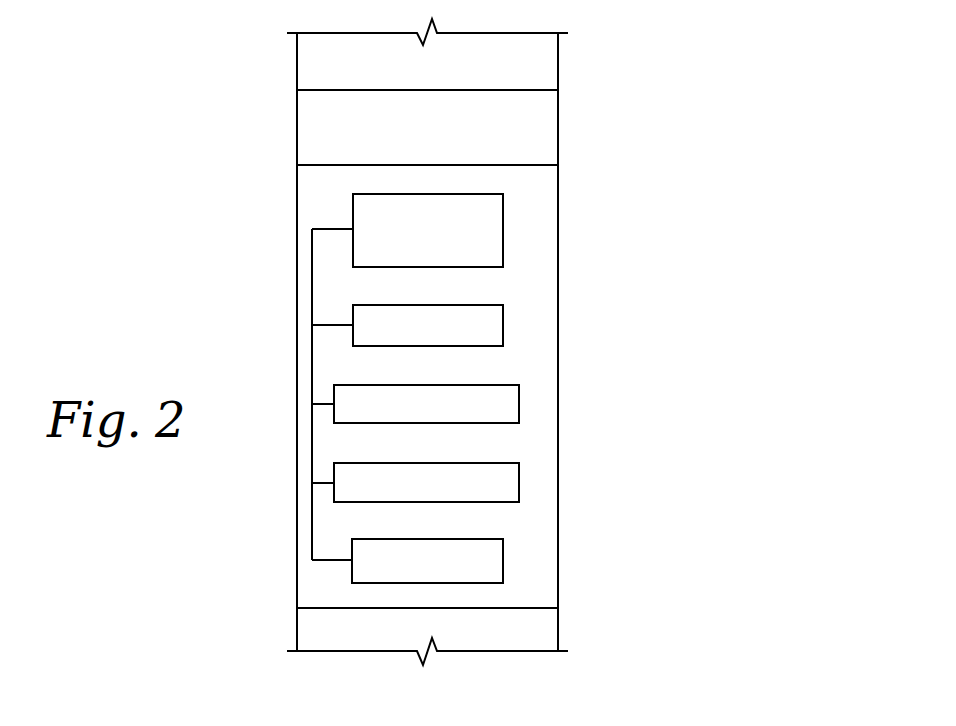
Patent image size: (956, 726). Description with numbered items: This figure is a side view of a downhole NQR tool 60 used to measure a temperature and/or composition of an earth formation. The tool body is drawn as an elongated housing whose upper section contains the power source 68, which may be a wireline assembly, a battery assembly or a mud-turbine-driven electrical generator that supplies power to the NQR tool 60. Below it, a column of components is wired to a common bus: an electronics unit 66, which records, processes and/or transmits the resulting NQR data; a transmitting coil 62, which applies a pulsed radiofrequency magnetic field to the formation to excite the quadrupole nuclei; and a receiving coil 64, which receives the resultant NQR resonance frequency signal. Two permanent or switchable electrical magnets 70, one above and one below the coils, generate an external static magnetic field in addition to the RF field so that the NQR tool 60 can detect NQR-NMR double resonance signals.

The NQR tool 60 is at (150, 209).
The transmitting coil 62 is at (490, 409).
The receiving coil 64 is at (490, 487).
The electronics unit 66 is at (490, 247).
The power source 68 is at (490, 134).
The electrical magnets 70 is at (490, 328).